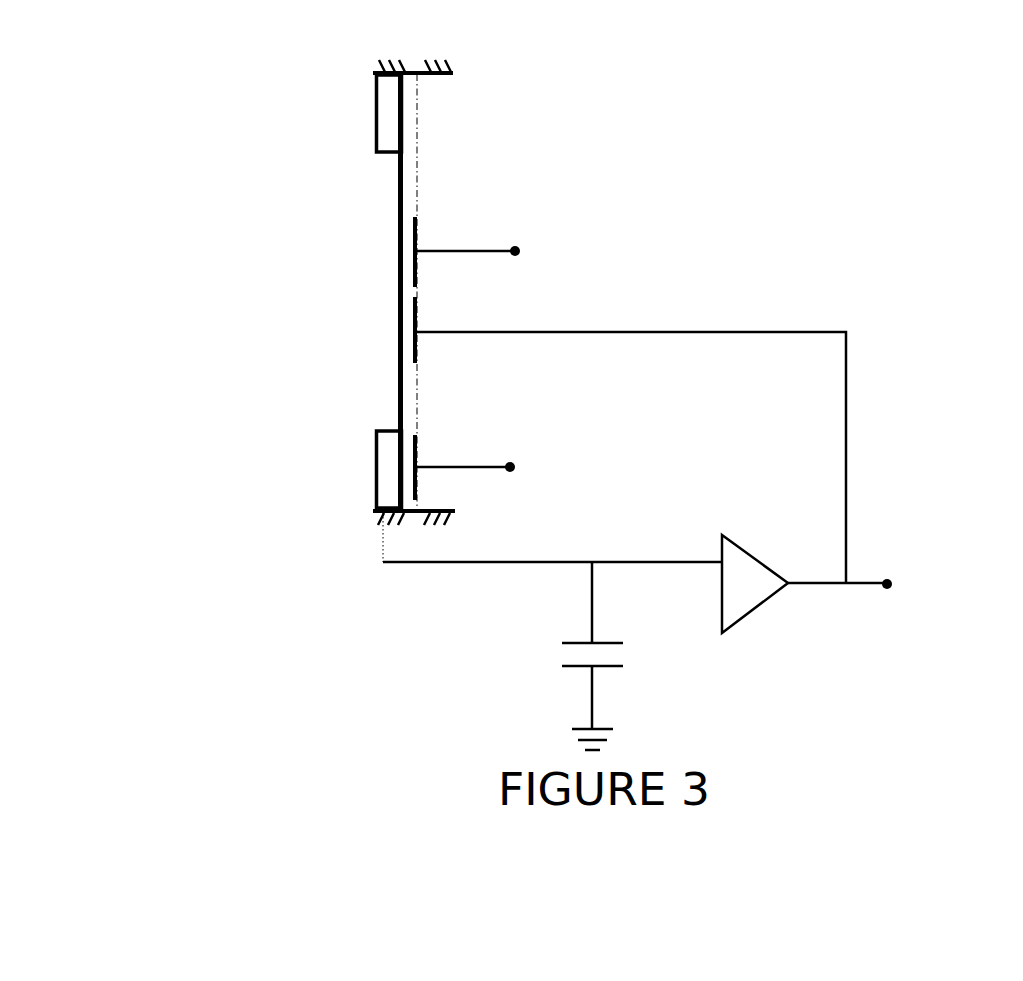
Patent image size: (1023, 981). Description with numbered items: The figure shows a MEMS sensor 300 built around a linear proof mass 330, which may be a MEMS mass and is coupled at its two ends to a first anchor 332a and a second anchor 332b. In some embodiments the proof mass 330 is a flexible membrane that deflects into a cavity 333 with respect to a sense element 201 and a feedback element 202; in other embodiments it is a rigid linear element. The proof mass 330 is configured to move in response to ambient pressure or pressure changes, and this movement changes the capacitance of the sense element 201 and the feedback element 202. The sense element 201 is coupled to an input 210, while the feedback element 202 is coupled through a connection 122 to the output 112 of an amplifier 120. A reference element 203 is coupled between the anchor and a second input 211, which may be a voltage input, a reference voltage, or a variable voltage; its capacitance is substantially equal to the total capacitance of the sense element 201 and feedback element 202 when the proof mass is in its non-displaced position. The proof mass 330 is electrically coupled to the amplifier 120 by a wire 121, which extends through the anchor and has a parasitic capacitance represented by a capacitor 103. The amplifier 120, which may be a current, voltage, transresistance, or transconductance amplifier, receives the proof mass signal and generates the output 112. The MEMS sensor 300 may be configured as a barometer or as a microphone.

The MEMS sensor 300 is at (113, 88).
The second anchor 332b is at (375, 104).
The first anchor 332a is at (375, 466).
The linear proof mass 330 is at (399, 298).
The cavity 333 is at (397, 393).
The sense element 201 is at (417, 216).
The feedback element 202 is at (415, 364).
The reference element 203 is at (417, 435).
The input 210 is at (521, 250).
The second input 211 is at (516, 467).
The feedback line 122 is at (848, 400).
The wire 121 is at (383, 563).
The amplifier 120 is at (768, 598).
The output 112 is at (893, 587).
The capacitor 103 is at (624, 666).